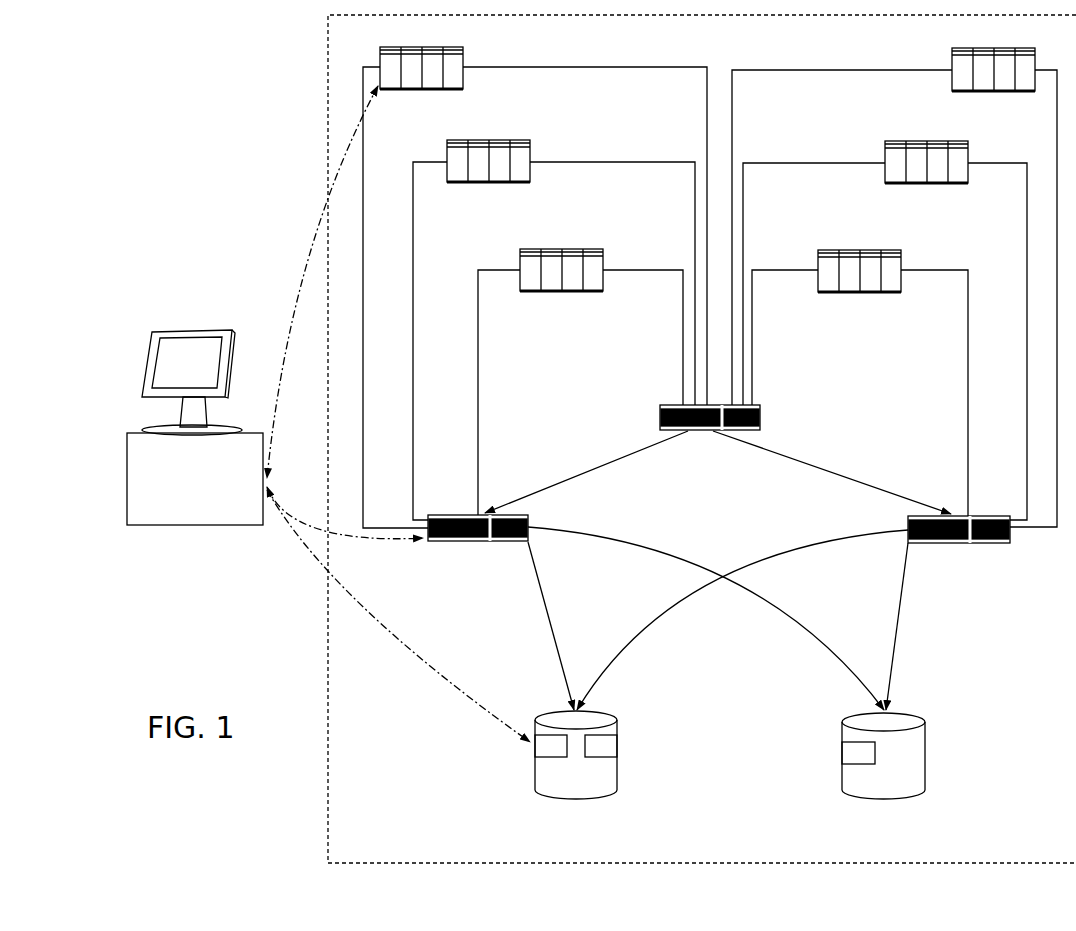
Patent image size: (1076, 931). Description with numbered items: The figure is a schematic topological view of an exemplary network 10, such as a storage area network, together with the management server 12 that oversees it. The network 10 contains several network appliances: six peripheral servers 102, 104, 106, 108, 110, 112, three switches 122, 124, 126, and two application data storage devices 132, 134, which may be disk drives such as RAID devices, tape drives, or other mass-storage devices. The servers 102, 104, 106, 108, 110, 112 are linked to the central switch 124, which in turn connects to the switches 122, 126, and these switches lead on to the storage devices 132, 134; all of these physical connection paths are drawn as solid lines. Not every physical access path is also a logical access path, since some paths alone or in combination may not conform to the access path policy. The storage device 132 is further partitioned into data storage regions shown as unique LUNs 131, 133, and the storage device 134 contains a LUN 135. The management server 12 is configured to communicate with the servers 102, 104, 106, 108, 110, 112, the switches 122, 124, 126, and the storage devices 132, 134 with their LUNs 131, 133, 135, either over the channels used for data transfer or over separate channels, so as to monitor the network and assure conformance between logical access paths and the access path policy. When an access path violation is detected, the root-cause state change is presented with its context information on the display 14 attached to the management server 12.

The network 10 is at (324, 794).
The management server 12 is at (125, 480).
The display 14 is at (180, 332).
The server 102 is at (465, 90).
The server 104 is at (832, 294).
The server 106 is at (532, 183).
The server 108 is at (604, 292).
The server 110 is at (948, 88).
The server 112 is at (883, 176).
The switch 122 is at (452, 541).
The switch 124 is at (683, 432).
The switch 126 is at (990, 545).
The LUN 131 is at (548, 745).
The storage device 132 is at (570, 773).
The LUN 133 is at (607, 745).
The storage device 134 is at (882, 775).
The LUN 135 is at (842, 755).